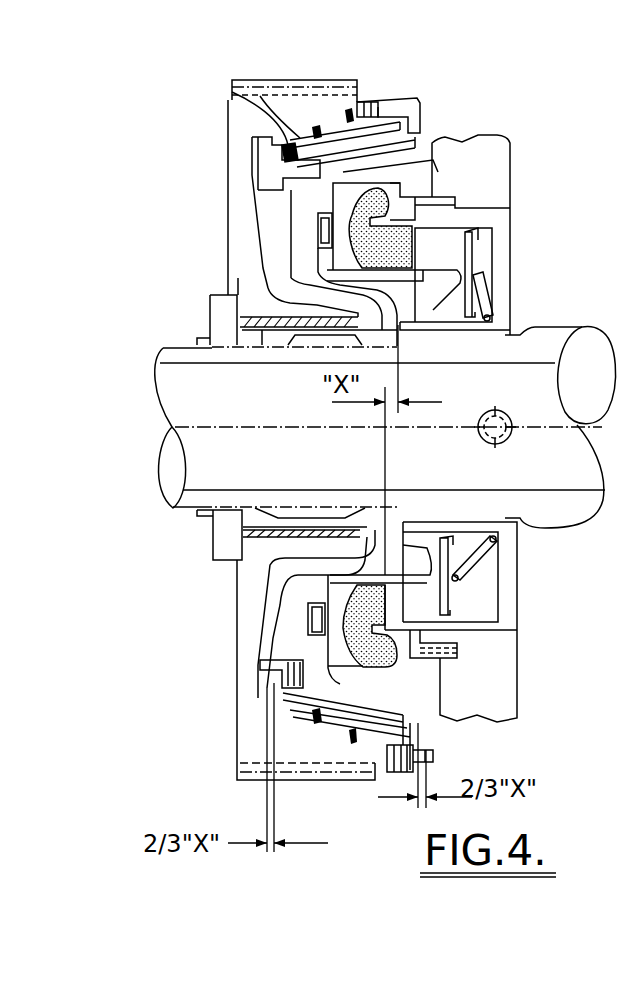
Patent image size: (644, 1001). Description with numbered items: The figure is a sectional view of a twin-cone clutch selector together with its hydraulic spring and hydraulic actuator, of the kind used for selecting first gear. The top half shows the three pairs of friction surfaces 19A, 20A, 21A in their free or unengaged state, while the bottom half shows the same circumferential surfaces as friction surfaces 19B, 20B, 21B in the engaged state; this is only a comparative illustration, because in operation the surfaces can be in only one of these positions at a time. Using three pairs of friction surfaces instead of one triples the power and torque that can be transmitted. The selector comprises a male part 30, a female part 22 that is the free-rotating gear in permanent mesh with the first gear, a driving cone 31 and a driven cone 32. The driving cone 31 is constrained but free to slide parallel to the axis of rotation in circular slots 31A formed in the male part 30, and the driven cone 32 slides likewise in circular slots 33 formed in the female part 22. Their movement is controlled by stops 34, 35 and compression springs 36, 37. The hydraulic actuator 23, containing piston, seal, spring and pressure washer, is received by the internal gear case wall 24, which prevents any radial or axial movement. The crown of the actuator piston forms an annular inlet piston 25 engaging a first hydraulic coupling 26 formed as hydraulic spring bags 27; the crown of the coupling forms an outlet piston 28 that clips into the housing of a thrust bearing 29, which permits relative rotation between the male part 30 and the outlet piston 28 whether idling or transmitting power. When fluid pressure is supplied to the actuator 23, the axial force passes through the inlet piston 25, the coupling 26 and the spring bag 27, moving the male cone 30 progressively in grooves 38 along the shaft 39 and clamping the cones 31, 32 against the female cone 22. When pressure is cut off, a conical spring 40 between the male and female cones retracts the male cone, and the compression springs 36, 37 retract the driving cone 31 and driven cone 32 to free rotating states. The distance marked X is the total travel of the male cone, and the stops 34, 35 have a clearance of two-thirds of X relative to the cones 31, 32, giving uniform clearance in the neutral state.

The friction surface 19A is at (262, 100).
The friction surface 20A is at (305, 128).
The friction surface 21A is at (318, 128).
The friction surface 19B is at (300, 700).
The friction surface 20B is at (318, 714).
The friction surface 21B is at (353, 733).
The female part 22 is at (237, 590).
The hydraulic actuator 23 is at (518, 602).
The internal gear case wall 24 is at (463, 138).
The annular inlet piston 25 is at (403, 605).
The first hydraulic coupling 26 is at (397, 660).
The hydraulic spring bag 27 is at (360, 243).
The outlet piston 28 is at (450, 593).
The thrust bearing 29 is at (318, 236).
The male part 30 is at (306, 616).
The driving cone 31 is at (273, 143).
The circular slots 31A is at (238, 113).
The driven cone 32 is at (433, 130).
The circular slots 33 is at (366, 100).
The stop 34 is at (252, 192).
The stop 35 is at (405, 97).
The compression spring 36 is at (265, 668).
The compression spring 37 is at (430, 755).
The grooves 38 is at (312, 347).
The shaft 39 is at (155, 493).
The conical spring 40 is at (275, 638).